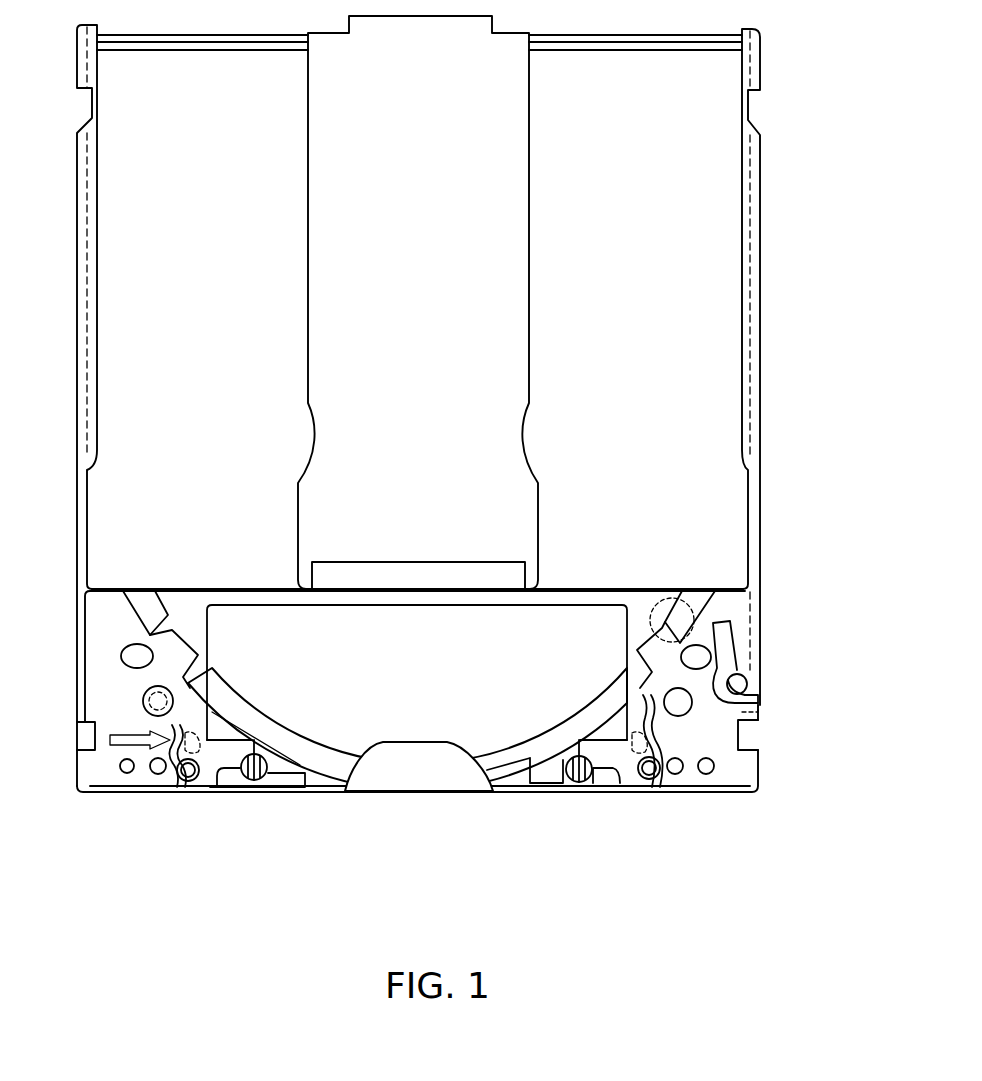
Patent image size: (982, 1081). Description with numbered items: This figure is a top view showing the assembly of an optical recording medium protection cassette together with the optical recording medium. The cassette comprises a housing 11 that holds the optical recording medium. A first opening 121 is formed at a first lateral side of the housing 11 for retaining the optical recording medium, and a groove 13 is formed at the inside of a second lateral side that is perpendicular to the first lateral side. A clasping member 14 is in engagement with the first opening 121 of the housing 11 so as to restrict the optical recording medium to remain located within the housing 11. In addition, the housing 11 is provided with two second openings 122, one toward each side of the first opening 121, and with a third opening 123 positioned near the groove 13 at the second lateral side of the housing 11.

The housing 11 is at (713, 285).
The groove 13 is at (760, 703).
The clasping member 14 is at (416, 777).
The first opening 121 is at (508, 790).
The second openings 122 is at (195, 752).
The third opening 123 is at (745, 718).